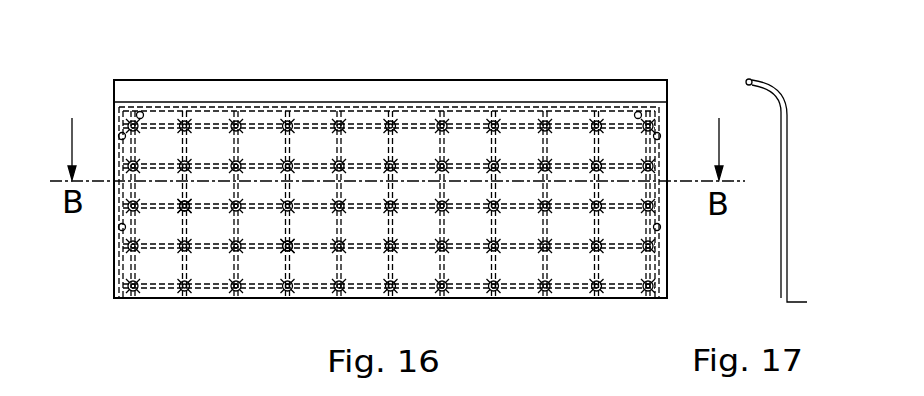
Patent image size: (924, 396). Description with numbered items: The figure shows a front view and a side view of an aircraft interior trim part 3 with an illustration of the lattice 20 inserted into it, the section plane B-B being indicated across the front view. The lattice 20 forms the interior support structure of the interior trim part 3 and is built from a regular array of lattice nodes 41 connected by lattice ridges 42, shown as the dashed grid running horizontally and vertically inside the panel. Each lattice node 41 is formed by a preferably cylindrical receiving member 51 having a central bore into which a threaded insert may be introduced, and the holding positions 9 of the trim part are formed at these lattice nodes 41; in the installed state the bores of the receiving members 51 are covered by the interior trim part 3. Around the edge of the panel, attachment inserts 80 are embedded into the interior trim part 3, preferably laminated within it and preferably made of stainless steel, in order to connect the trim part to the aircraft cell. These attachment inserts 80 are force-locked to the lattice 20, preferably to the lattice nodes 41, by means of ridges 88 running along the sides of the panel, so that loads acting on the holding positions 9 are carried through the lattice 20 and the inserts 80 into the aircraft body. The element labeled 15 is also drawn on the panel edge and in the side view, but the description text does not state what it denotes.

In FIG. 16, the interior trim part 3 is at (659, 137).
In FIG. 16, the edge strip 15 is at (393, 79).
In FIG. 17, the edge strip 15 is at (756, 78).
In FIG. 16, the attachment inserts 80 is at (636, 113).
In FIG. 16, the ridges 88 is at (122, 258).
In FIG. 16, the holding positions 9 is at (136, 250).
In FIG. 16, the lattice nodes 41 is at (213, 326).
In FIG. 16, the receiving members 51 is at (257, 322).
In FIG. 16, the lattice ridges 42 is at (467, 284).
In FIG. 16, the lattice 20 is at (630, 248).